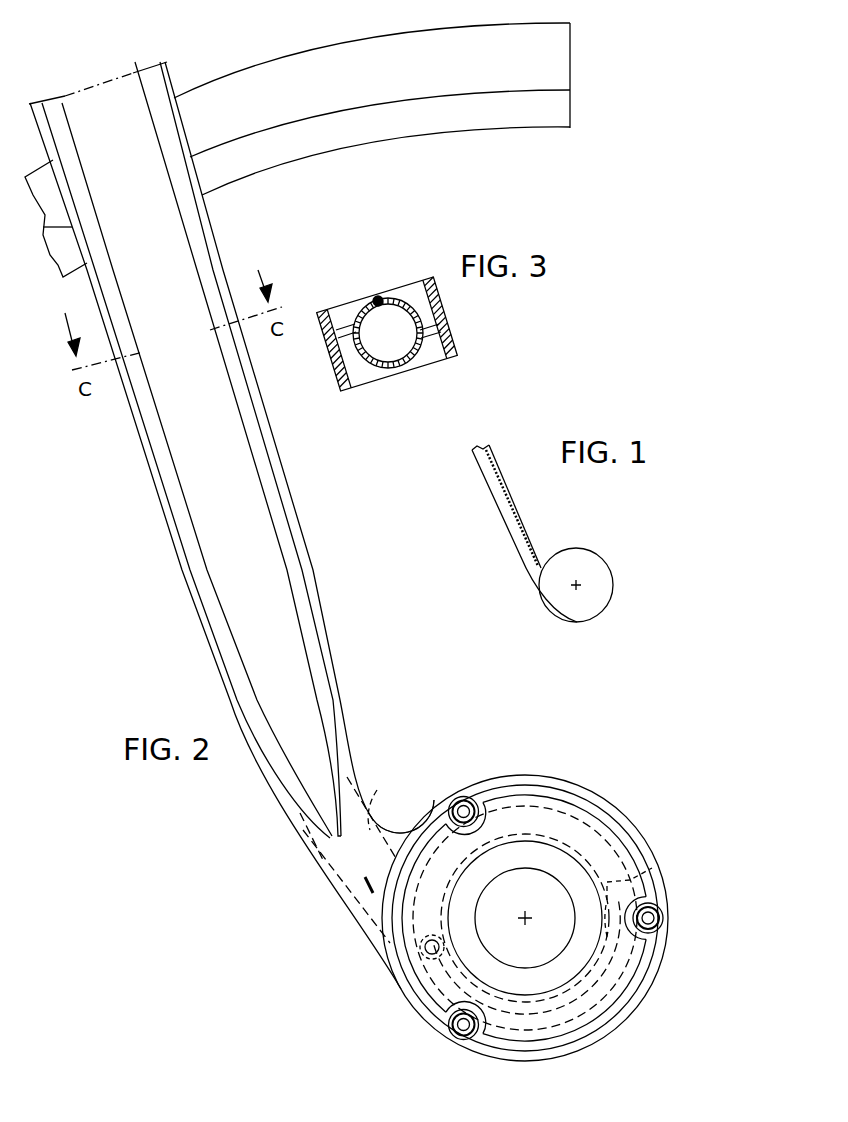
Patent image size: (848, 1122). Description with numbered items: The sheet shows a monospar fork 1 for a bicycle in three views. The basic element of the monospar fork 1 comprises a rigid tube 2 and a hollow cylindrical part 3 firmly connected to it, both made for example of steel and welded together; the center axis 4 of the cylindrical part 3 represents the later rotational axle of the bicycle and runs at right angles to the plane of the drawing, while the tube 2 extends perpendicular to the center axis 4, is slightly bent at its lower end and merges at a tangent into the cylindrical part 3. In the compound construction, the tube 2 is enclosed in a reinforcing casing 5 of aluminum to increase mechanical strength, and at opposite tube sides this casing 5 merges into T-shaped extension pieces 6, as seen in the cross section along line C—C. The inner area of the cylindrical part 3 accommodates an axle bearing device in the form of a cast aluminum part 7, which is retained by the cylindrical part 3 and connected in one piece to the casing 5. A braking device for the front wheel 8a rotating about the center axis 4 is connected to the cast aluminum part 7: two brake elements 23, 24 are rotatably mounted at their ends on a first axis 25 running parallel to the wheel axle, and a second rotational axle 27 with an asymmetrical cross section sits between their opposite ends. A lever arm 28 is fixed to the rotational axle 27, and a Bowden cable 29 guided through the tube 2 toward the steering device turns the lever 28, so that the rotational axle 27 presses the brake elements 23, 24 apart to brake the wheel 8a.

In FIG. 2, the monospar fork 1 is at (364, 648).
In FIG. 1, the monospar fork 1 is at (556, 536).
In FIG. 2, the rigid tube 2 is at (372, 806).
In FIG. 3, the rigid tube 2 is at (377, 298).
In FIG. 1, the rigid tube 2 is at (505, 489).
In FIG. 2, the hollow cylindrical part 3 is at (423, 823).
In FIG. 1, the hollow cylindrical part 3 is at (613, 580).
In FIG. 2, the center axis 4 is at (528, 921).
In FIG. 1, the center axis 4 is at (580, 590).
In FIG. 2, the reinforcing casing 5 is at (273, 535).
In FIG. 3, the reinforcing casing 5 is at (410, 372).
In FIG. 2, the T-shaped extension pieces 6 is at (282, 473).
In FIG. 3, the T-shaped extension pieces 6 is at (457, 340).
In FIG. 2, the cast aluminum part 7 is at (547, 782).
In FIG. 2, the front wheel 8a is at (445, 122).
In FIG. 2, the brake element 23 is at (625, 822).
In FIG. 2, the brake element 24 is at (643, 982).
In FIG. 2, the first axis 25 is at (423, 952).
In FIG. 2, the second rotational axle 27 is at (650, 868).
In FIG. 2, the lever arm 28 is at (434, 1013).
In FIG. 2, the Bowden cable 29 is at (368, 886).